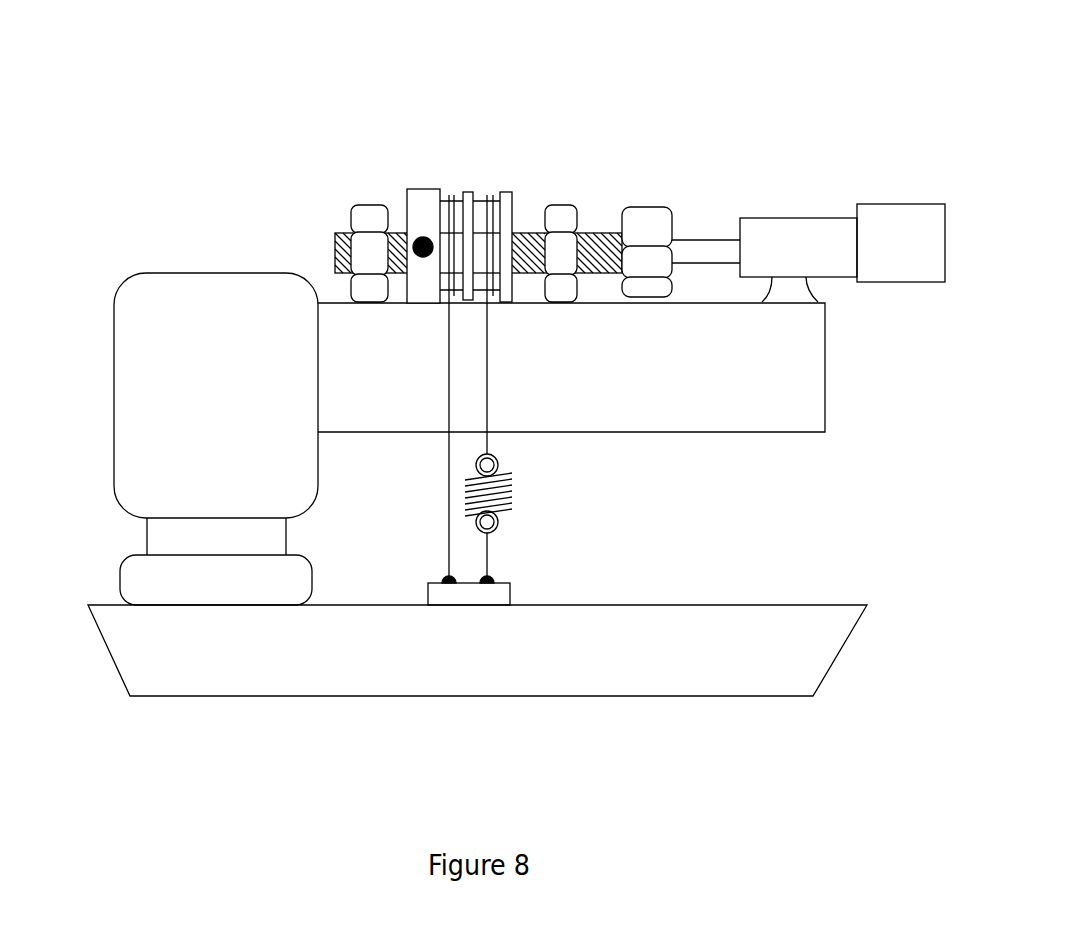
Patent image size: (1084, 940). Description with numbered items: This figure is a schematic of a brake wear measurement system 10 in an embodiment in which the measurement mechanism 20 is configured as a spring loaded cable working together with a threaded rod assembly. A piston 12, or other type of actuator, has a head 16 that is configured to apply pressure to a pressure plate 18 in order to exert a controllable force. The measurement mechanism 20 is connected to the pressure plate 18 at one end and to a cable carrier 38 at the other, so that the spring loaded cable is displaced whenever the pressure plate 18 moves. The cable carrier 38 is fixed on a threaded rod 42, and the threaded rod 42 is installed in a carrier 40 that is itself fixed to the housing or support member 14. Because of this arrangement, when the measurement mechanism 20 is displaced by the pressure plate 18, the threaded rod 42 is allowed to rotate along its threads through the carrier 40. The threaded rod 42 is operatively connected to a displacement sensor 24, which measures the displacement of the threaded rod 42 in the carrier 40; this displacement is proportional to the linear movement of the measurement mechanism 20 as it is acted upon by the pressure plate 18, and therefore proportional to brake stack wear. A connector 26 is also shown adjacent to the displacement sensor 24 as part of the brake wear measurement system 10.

The brake wear measurement system 10 is at (236, 56).
The piston 12 is at (178, 308).
The support member 14 is at (730, 402).
The head 16 is at (155, 575).
The pressure plate 18 is at (215, 697).
The measurement mechanism 20 is at (505, 510).
The displacement sensor 24 is at (800, 240).
The connector 26 is at (905, 230).
The cable carrier 38 is at (505, 303).
The carrier 40 is at (372, 203).
The threaded rod 42 is at (598, 233).